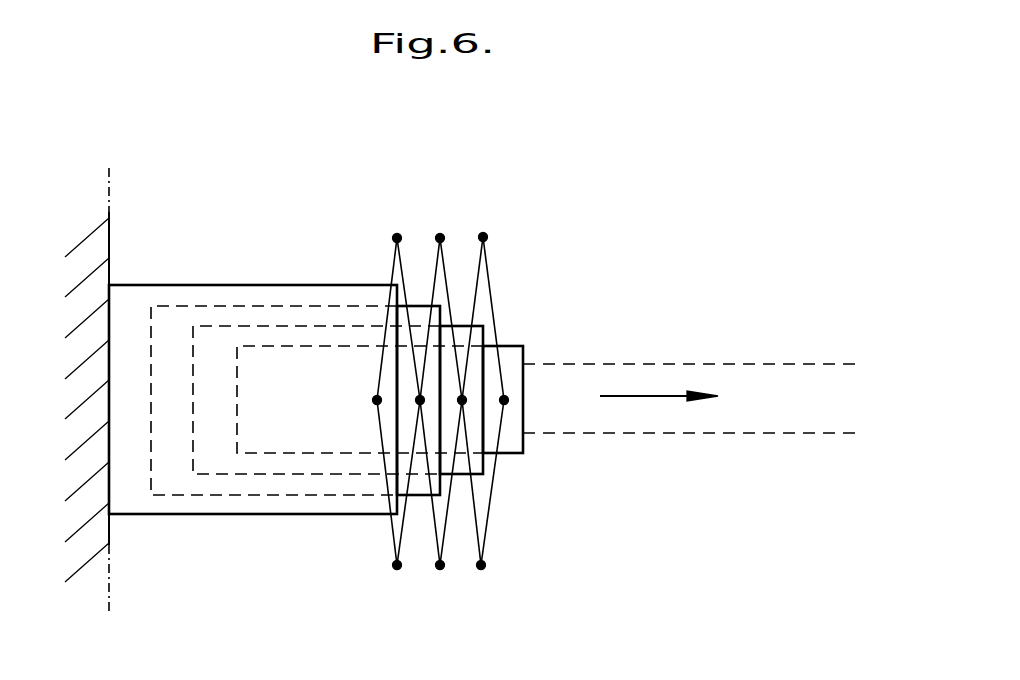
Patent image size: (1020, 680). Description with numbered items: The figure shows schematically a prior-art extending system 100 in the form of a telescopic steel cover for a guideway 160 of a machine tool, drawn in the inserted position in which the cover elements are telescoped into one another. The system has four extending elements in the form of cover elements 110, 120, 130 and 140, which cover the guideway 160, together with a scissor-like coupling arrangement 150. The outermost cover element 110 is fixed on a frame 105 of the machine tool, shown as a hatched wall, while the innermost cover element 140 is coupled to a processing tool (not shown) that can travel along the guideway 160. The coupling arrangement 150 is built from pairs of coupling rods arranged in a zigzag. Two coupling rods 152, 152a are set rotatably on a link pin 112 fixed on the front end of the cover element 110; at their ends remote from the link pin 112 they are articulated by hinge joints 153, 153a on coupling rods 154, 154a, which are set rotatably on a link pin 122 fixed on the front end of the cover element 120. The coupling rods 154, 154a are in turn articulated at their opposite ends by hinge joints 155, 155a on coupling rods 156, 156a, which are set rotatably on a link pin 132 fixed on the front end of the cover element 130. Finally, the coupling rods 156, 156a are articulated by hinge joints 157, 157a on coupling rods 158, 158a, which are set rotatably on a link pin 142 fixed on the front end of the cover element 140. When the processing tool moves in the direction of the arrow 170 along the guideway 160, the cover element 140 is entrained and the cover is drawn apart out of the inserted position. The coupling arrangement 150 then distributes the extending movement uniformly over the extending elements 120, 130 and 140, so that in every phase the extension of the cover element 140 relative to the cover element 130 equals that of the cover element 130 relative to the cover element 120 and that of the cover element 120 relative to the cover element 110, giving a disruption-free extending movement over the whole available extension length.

The vibration damping device 100 is at (316, 208).
The frame 105 is at (119, 209).
The cover element 110 is at (130, 516).
The link pin 112 is at (375, 401).
The cover element 120 is at (197, 496).
The link pin 122 is at (419, 398).
The cover element 130 is at (267, 474).
The link pin 132 is at (463, 402).
The cover element 140 is at (327, 454).
The link pin 142 is at (505, 398).
The coupling arrangement 150 is at (488, 208).
The coupling rod 152 is at (386, 333).
The coupling rod 152a is at (382, 440).
The hinge joint 153 is at (397, 238).
The hinge joint 153a is at (397, 565).
The coupling rod 154 is at (436, 527).
The coupling rod 154a is at (406, 525).
The hinge joint 155 is at (441, 567).
The hinge joint 155a is at (440, 238).
The coupling rod 156 is at (477, 282).
The coupling rod 156a is at (478, 512).
The hinge joint 157 is at (485, 237).
The hinge joint 157a is at (483, 565).
The coupling rod 158 is at (492, 298).
The coupling rod 158a is at (490, 490).
The guideway 160 is at (791, 350).
The arrow 170 is at (650, 394).